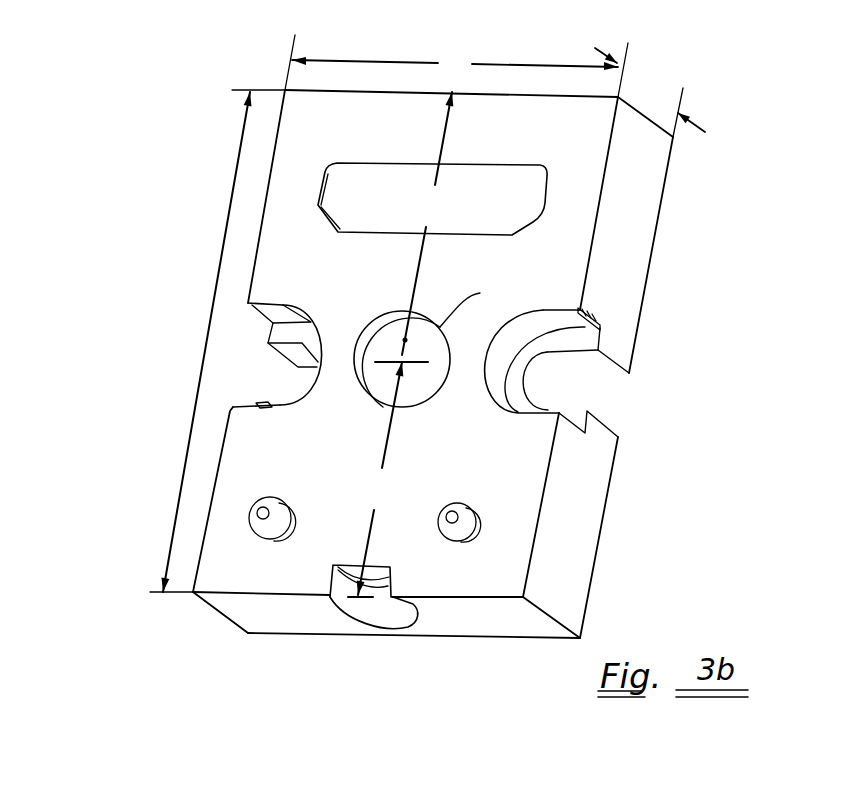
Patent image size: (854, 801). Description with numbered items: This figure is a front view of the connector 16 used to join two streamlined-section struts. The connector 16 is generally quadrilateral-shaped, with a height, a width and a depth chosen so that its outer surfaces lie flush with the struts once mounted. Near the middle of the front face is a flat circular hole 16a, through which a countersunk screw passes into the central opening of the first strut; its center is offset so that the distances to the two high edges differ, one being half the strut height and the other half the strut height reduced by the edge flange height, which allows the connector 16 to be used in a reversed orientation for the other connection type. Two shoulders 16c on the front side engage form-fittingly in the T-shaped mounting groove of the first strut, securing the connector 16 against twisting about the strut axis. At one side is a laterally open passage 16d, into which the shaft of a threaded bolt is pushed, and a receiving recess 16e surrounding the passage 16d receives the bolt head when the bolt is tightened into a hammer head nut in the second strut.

The connector 16 is at (133, 83).
The flat circular hole 16a is at (423, 400).
The shoulders 16c is at (263, 519).
The laterally open passage 16d is at (590, 393).
The receiving recess 16e is at (550, 342).